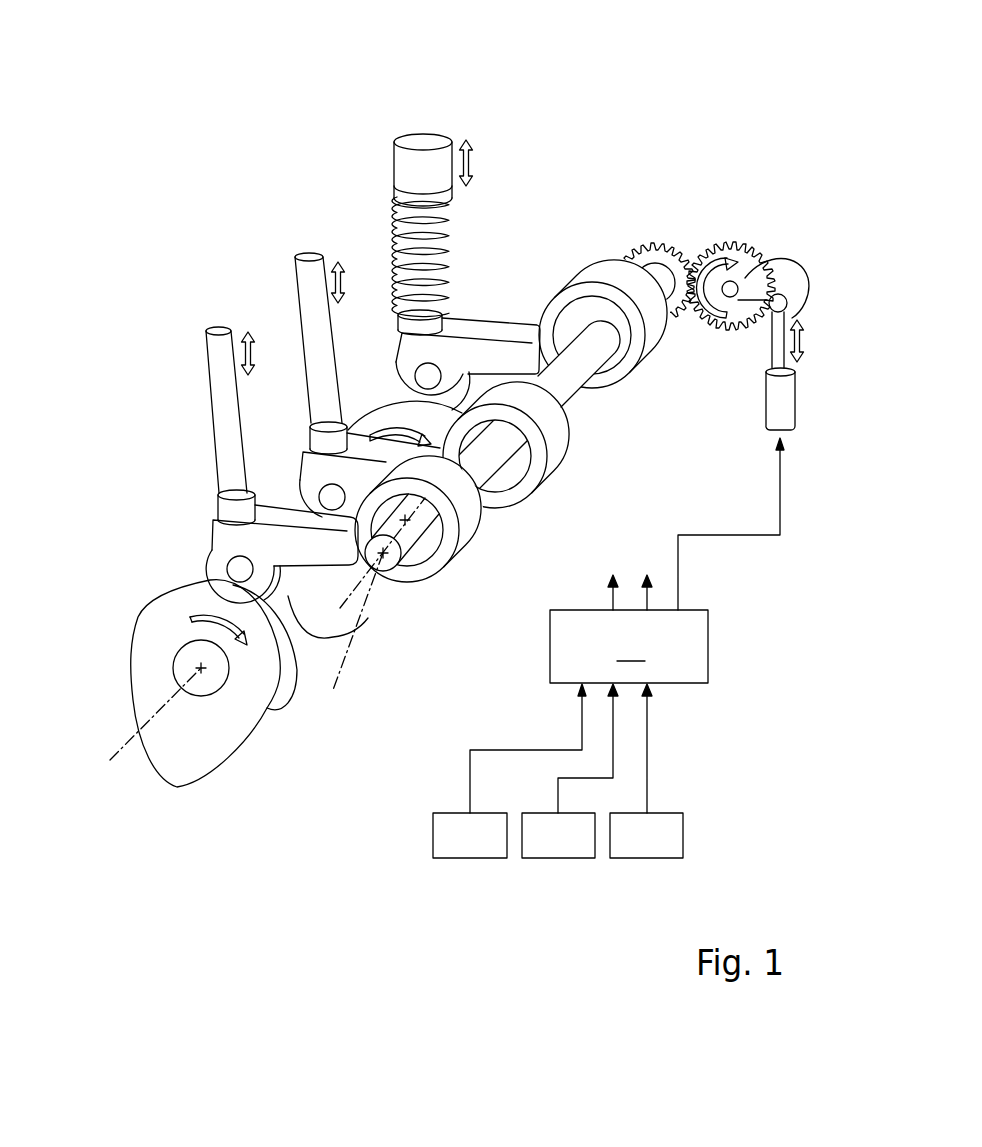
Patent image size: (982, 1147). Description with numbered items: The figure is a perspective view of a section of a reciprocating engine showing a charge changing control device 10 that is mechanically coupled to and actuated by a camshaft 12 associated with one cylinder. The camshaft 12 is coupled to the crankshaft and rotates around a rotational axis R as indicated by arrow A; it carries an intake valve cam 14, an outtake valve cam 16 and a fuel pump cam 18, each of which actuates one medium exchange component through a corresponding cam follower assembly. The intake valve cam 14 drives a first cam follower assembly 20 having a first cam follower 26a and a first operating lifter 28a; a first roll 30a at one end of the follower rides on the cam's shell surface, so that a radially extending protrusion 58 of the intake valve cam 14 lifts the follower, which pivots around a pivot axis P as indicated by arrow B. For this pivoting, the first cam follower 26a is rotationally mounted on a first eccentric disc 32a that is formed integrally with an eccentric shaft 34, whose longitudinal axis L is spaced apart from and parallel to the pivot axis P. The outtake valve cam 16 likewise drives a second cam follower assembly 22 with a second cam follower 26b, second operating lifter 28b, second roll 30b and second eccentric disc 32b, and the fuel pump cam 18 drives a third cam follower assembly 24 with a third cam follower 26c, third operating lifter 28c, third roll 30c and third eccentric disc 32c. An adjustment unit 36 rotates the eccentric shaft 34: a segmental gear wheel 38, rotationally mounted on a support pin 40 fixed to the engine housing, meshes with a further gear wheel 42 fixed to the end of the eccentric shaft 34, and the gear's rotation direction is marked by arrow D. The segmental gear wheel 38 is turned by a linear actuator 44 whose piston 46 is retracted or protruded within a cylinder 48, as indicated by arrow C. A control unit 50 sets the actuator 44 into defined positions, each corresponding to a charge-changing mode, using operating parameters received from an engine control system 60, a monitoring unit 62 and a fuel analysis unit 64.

The charge changing control device 10 is at (616, 84).
The camshaft 12 is at (116, 734).
The intake valve cam 14 is at (237, 732).
The outtake valve cam 16 is at (347, 612).
The fuel pump cam 18 is at (392, 398).
The first cam follower assembly 20 is at (231, 464).
The second cam follower assembly 22 is at (289, 385).
The third cam follower assembly 24 is at (432, 272).
The first cam follower 26a is at (214, 530).
The second cam follower 26b is at (300, 470).
The third cam follower 26c is at (483, 327).
The first operating lifter 28a is at (217, 371).
The second operating lifter 28b is at (311, 280).
The third operating lifter 28c is at (393, 168).
The first roll 30a is at (207, 565).
The second roll 30b is at (296, 490).
The third roll 30c is at (393, 380).
The first eccentric disc 32a is at (430, 550).
The second eccentric disc 32b is at (517, 478).
The third eccentric disc 32c is at (620, 355).
The eccentric shaft 34 is at (563, 393).
The adjustment unit 36 is at (758, 229).
The segmental gear wheel 38 is at (740, 330).
The support pin 40 is at (737, 291).
The further gear wheel 42 is at (672, 240).
The actuator 44 is at (784, 384).
The piston 46 is at (777, 338).
The cylinder 48 is at (766, 410).
The control unit 50 is at (627, 625).
The radially extending protrusion 58 is at (177, 764).
The engine control system 60 is at (470, 852).
The monitoring unit 62 is at (556, 852).
The fuel analysis unit 64 is at (646, 852).
The arrow indicating rotational direction A is at (189, 619).
The arrow indicating pivoting movement B is at (232, 345).
The arrow indicating piston movement C is at (800, 341).
The gear rotation direction D is at (710, 265).
The longitudinal axis L is at (358, 630).
The pivot axis P is at (417, 629).
The rotational axis R is at (143, 725).